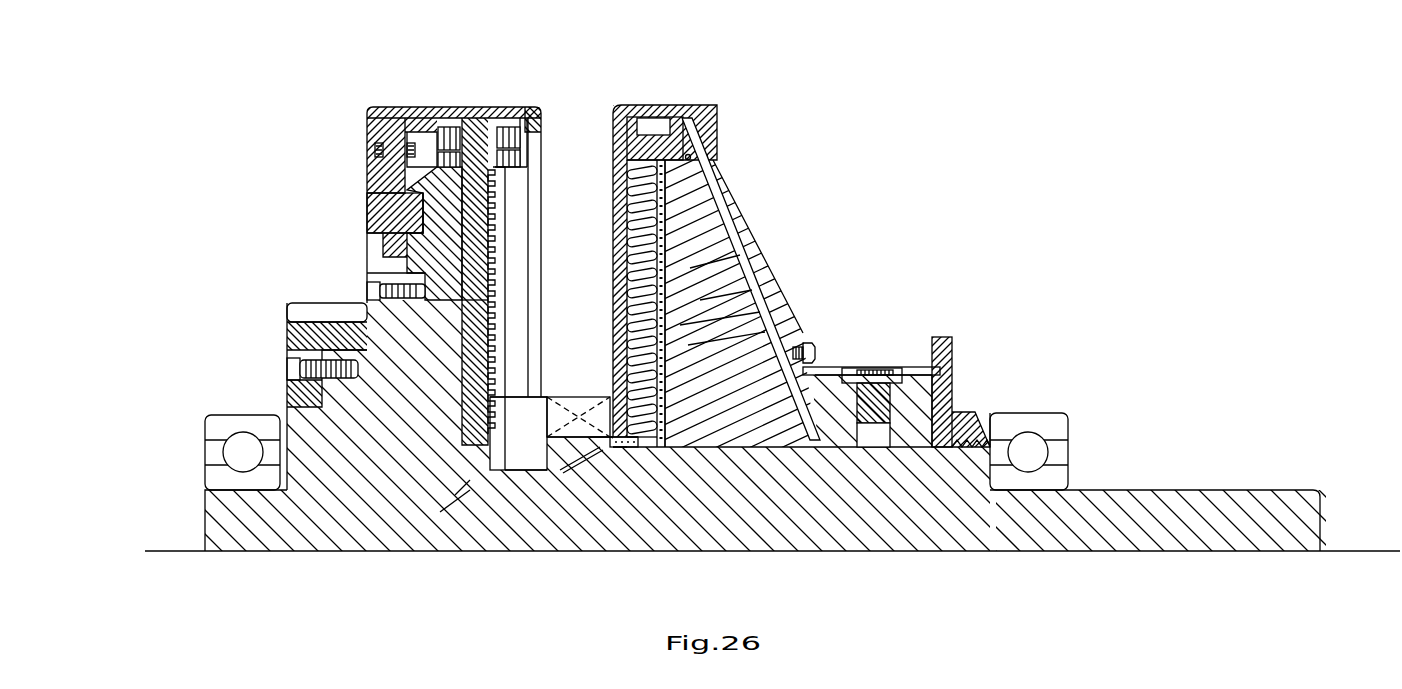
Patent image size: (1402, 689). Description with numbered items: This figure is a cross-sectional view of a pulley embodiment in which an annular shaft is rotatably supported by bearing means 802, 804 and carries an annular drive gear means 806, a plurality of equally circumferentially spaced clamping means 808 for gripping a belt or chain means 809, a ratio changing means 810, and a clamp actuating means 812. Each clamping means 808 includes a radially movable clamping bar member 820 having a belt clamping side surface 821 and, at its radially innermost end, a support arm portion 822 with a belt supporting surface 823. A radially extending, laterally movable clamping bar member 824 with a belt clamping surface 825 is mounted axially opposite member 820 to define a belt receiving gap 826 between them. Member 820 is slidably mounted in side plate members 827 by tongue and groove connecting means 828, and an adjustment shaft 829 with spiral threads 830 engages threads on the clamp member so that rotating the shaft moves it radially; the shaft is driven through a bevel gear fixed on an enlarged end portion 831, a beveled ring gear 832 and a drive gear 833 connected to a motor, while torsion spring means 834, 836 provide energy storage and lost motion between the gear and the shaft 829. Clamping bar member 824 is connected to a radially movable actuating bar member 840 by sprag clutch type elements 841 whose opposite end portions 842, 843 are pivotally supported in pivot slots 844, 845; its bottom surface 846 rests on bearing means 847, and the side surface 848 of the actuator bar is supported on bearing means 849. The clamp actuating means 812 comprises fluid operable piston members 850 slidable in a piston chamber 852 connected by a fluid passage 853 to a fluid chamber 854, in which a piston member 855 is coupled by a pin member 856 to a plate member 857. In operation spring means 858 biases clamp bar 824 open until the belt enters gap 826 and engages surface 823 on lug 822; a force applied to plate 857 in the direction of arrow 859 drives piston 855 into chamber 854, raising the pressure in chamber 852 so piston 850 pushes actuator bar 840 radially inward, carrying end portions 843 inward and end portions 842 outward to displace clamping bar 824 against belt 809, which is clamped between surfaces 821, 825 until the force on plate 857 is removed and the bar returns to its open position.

The bearing means 802 is at (188, 431).
The bearing means 804 is at (1078, 418).
The annular drive gear means 806 is at (282, 318).
The belt or chain clamping means 808 is at (527, 442).
The belt or chain means 809 is at (591, 408).
The ratio changing means 810 is at (455, 185).
The clamp actuating means 812 is at (770, 141).
The clamping bar member 820 is at (440, 512).
The belt clamping side surface 821 is at (455, 495).
The support arm portion 822 is at (559, 475).
The belt supporting surface 823 is at (575, 458).
The clamping bar member 824 is at (617, 277).
The belt clamping surface 825 is at (612, 236).
The belt receiving gap 826 is at (572, 125).
The side plate members 827 is at (517, 368).
The tongue and groove connecting means 828 is at (463, 410).
The adjustment shaft 829 is at (467, 348).
The spiral threads 830 is at (447, 128).
The enlarged end portion 831 is at (470, 125).
The beveled ring gear 832 is at (375, 130).
The drive gear 833 is at (380, 217).
The torsion spring means 834 is at (512, 118).
The torsion spring means 836 is at (510, 183).
The actuating bar member 840 is at (760, 312).
The sprag clutch type elements 841 is at (765, 332).
The end portion 842 is at (637, 312).
The end portion 843 is at (752, 290).
The pivot slot 844 is at (740, 255).
The pivot slot 845 is at (702, 246).
The bottom surface 846 is at (622, 447).
The bearing means 847 is at (602, 440).
The side surface 848 is at (702, 171).
The bearing means 849 is at (770, 352).
The fluid operable piston member 850 is at (686, 150).
The piston chamber 852 is at (652, 125).
The fluid passage 853 is at (722, 205).
The fluid chamber 854 is at (877, 440).
The piston member 855 is at (952, 393).
The pin member 856 is at (895, 372).
The plate member 857 is at (848, 350).
The spring means 858 is at (653, 447).
The arrow 859 is at (877, 358).